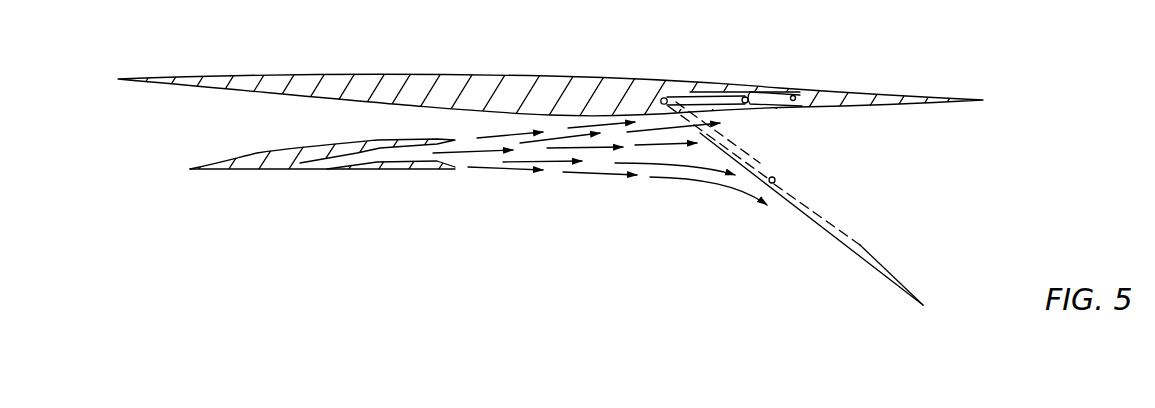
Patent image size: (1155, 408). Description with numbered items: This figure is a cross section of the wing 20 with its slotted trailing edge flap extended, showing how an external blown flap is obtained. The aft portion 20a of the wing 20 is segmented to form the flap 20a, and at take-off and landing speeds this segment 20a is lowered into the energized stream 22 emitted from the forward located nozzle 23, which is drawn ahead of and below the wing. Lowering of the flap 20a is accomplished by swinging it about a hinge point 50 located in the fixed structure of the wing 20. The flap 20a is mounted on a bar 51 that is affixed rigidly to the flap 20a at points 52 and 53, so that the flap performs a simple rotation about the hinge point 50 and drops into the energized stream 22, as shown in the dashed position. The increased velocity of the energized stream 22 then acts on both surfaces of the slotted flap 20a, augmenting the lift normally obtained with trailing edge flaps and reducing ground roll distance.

The wing 20 is at (500, 77).
The aft portion of the wing (flap) 20a is at (895, 91).
The energized stream 22 is at (458, 153).
The nozzle 23 is at (257, 169).
The hinge point 50 is at (672, 98).
The bar 51 is at (735, 95).
The attachment point 52 is at (732, 103).
The attachment point 53 is at (803, 108).